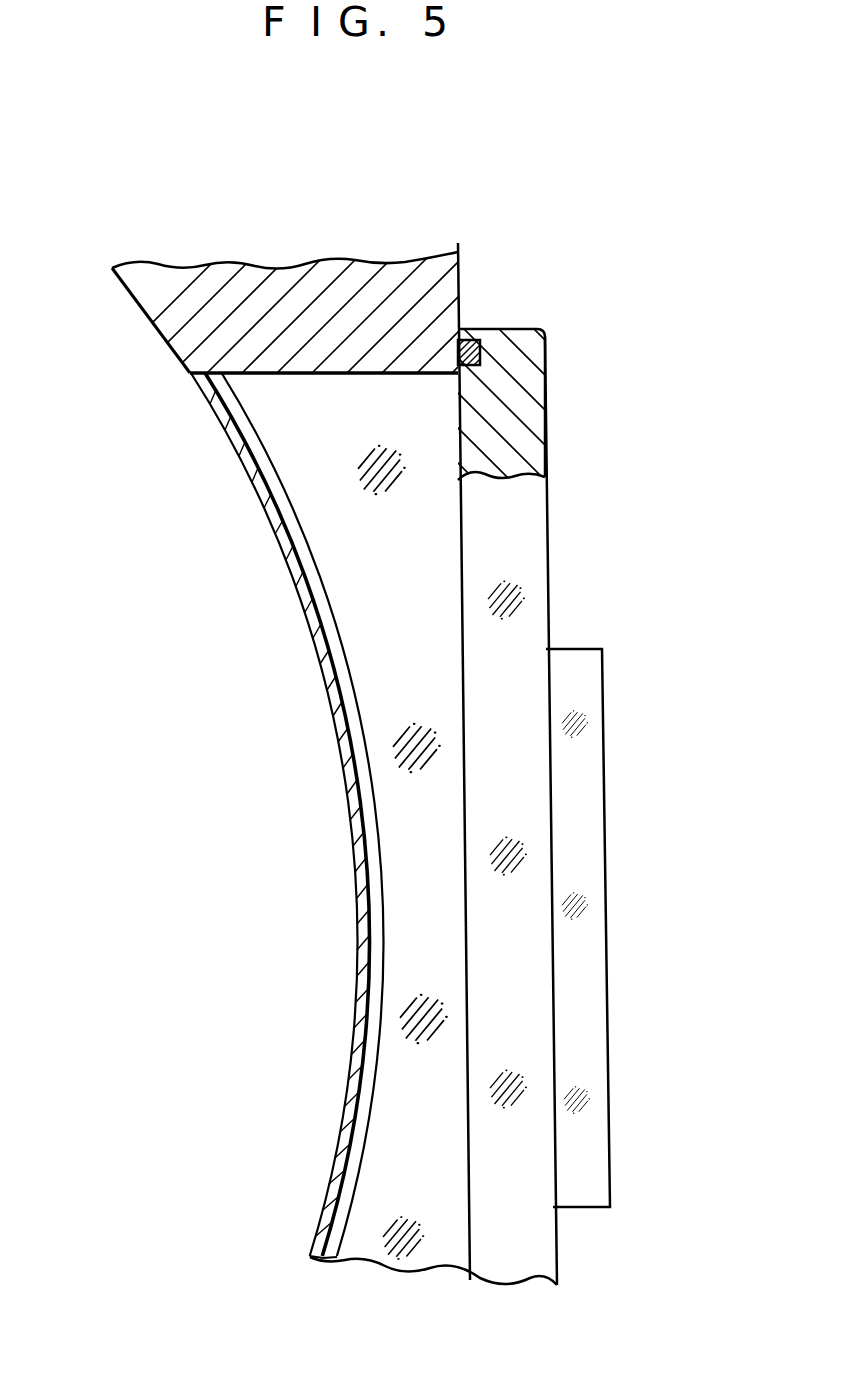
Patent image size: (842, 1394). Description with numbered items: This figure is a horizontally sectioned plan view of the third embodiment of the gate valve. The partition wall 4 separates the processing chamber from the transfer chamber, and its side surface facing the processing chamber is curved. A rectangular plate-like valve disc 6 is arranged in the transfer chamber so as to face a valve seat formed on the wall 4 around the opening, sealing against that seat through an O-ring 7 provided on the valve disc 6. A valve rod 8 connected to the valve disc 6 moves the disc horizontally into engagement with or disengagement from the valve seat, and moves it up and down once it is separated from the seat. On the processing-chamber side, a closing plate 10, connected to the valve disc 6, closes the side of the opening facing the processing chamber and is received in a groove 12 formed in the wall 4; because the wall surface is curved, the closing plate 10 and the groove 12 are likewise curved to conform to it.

The partition wall 4 is at (165, 330).
The valve disc 6 is at (546, 405).
The O-ring 7 is at (470, 340).
The valve rod 8 is at (600, 809).
The closing plate 10 is at (348, 798).
The groove 12 is at (322, 605).